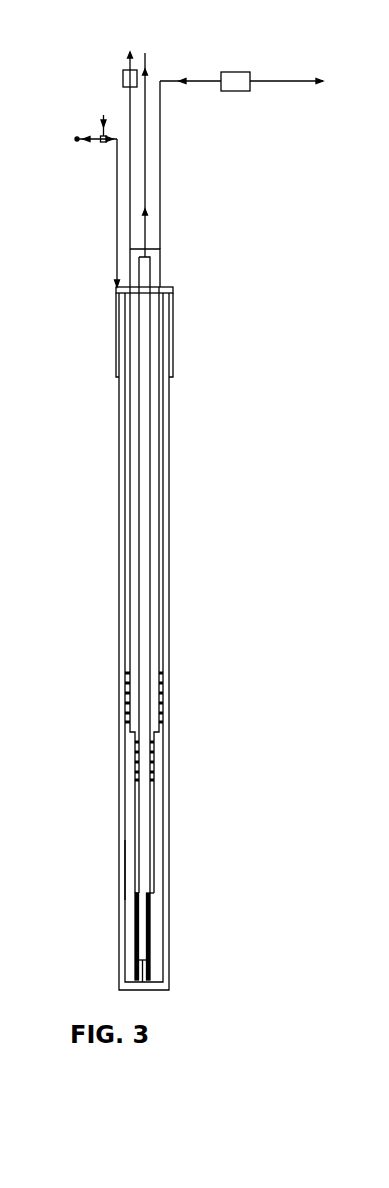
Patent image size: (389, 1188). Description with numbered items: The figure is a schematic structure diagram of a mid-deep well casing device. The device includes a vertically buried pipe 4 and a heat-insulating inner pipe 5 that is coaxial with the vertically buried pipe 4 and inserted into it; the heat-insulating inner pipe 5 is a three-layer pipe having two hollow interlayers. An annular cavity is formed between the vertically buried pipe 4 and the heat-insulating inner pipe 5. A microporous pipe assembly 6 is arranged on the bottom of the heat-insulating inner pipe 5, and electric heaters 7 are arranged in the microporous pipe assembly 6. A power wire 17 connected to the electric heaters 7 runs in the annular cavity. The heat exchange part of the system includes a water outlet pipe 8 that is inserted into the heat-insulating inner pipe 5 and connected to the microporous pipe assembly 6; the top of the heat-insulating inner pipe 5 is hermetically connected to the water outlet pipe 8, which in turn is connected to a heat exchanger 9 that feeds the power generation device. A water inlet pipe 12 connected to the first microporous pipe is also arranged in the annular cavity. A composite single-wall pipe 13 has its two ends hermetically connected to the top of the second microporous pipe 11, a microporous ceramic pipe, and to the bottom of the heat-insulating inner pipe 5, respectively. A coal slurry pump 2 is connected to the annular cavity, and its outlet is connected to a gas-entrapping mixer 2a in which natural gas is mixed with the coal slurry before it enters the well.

The coal slurry pump 2 is at (77, 139).
The gas-entrapping mixer 2a is at (101, 142).
The vertically buried pipe 4 is at (120, 397).
The heat-insulating inner pipe 5 is at (161, 713).
The microporous pipe assembly 6 is at (133, 937).
The electric heaters 7 is at (124, 913).
The water outlet pipe 8 is at (147, 265).
The heat exchanger 9 is at (235, 77).
The second microporous pipe 11 is at (150, 900).
The water inlet pipe 12 is at (115, 269).
The composite single-wall pipe 13 is at (152, 735).
The power wire 17 is at (125, 867).